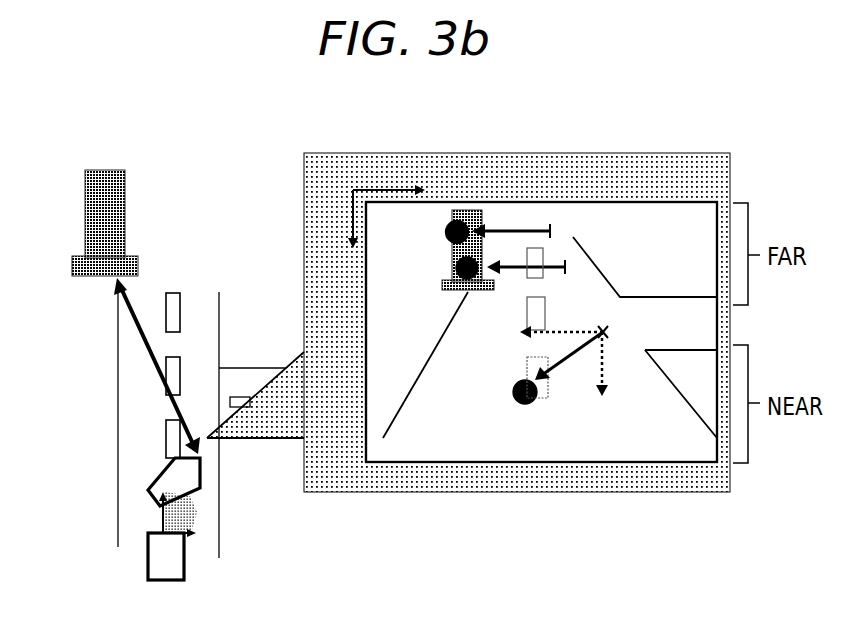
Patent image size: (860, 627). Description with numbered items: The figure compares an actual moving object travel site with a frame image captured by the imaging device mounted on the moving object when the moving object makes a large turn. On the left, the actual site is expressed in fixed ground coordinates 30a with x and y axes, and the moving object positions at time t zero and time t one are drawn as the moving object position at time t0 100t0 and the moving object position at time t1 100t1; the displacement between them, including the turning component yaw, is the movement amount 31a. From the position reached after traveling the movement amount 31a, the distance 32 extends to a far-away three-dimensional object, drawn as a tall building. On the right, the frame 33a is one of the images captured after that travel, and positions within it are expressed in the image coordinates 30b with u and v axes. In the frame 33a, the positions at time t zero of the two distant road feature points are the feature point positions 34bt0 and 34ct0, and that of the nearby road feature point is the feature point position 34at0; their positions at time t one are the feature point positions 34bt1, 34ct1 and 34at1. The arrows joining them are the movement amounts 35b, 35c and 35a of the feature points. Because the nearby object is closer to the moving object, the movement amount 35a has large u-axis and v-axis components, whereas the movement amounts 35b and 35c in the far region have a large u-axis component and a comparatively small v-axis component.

The fixed coordinates on the ground space 30a is at (160, 527).
The coordinates on the frame image 30b is at (383, 193).
The movement amount of the moving object 31a is at (193, 517).
The distance 32 is at (128, 312).
The frame 33a is at (653, 202).
The feature point position at time t0 34bt0 is at (556, 230).
The feature point position at time t1 34bt1 is at (448, 240).
The feature point position at time t0 34ct0 is at (570, 265).
The feature point position at time t1 34ct1 is at (453, 288).
The feature point position at time t0 34at0 is at (607, 330).
The feature point position at time t1 34at1 is at (515, 405).
The movement amount of the feature point 35a is at (568, 367).
The movement amount of the feature point 35b is at (497, 228).
The movement amount of the feature point 35c is at (503, 271).
The moving object position at time t0 100t0 is at (148, 560).
The moving object position at time t1 100t1 is at (153, 477).